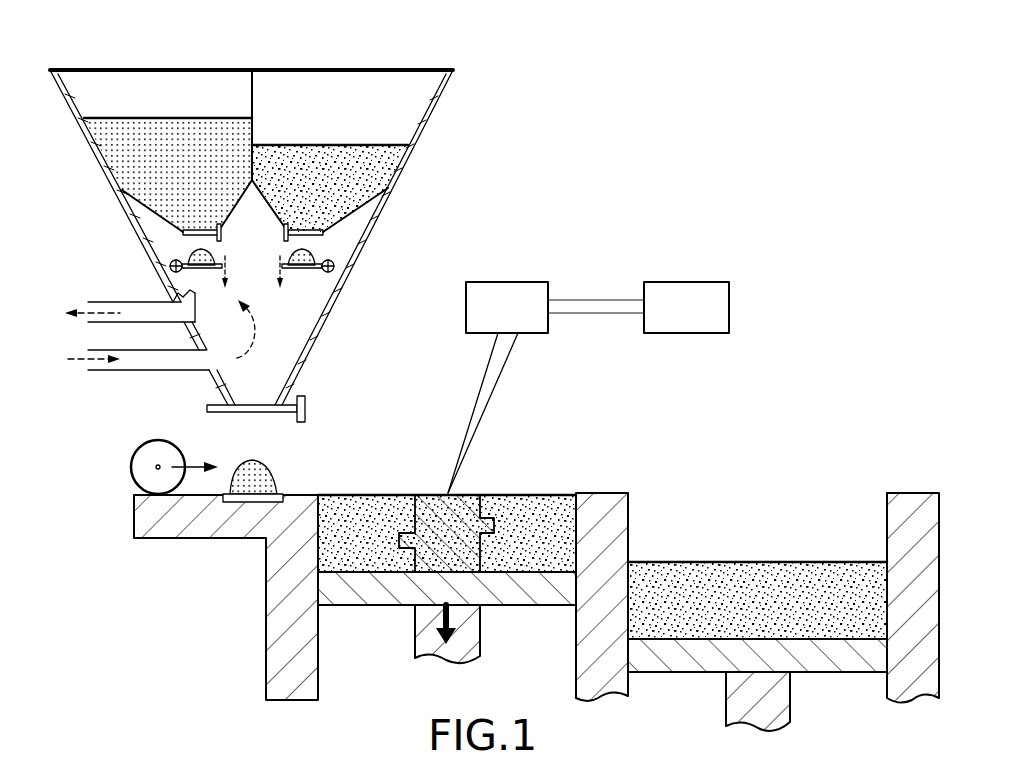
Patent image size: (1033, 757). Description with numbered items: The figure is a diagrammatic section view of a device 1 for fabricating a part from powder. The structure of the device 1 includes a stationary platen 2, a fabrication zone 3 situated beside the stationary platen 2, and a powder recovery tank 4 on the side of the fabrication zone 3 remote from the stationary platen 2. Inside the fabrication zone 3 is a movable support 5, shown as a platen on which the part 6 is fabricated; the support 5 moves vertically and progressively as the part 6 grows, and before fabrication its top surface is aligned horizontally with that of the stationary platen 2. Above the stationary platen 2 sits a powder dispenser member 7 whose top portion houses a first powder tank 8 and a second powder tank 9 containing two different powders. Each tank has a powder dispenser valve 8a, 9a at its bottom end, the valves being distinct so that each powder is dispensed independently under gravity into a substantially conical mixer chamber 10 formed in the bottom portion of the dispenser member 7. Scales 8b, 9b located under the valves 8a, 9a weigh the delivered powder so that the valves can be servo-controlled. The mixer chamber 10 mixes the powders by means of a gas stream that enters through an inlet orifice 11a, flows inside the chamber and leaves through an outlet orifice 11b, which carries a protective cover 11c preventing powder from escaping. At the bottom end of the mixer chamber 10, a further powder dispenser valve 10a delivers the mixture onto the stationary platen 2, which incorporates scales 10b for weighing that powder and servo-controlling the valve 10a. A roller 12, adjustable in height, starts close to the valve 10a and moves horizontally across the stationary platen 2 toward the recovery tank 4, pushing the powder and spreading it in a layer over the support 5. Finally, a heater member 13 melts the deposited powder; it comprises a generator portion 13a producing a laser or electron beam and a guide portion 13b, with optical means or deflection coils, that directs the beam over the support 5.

The device 1 is at (733, 79).
The stationary platen 2 is at (180, 518).
The fabrication zone 3 is at (532, 510).
The powder recovery tank 4 is at (755, 575).
The movable support 5 is at (530, 600).
The part 6 is at (443, 512).
The powder dispenser member 7 is at (162, 64).
The first powder tank 8 is at (100, 100).
The powder dispenser valve 8a is at (182, 232).
The scales 8b is at (222, 270).
The second powder tank 9 is at (402, 100).
The powder dispenser valve 9a is at (324, 232).
The scales 9b is at (334, 268).
The mixer chamber 10 is at (284, 332).
The powder dispenser valve 10a is at (306, 407).
The scales 10b is at (247, 502).
The inlet orifice 11a is at (195, 360).
The outlet orifice 11b is at (180, 312).
The protective cover 11c is at (170, 288).
The roller 12 is at (132, 465).
The heater member 13 is at (670, 250).
The generator portion 13a is at (706, 318).
The guide portion 13b is at (526, 318).